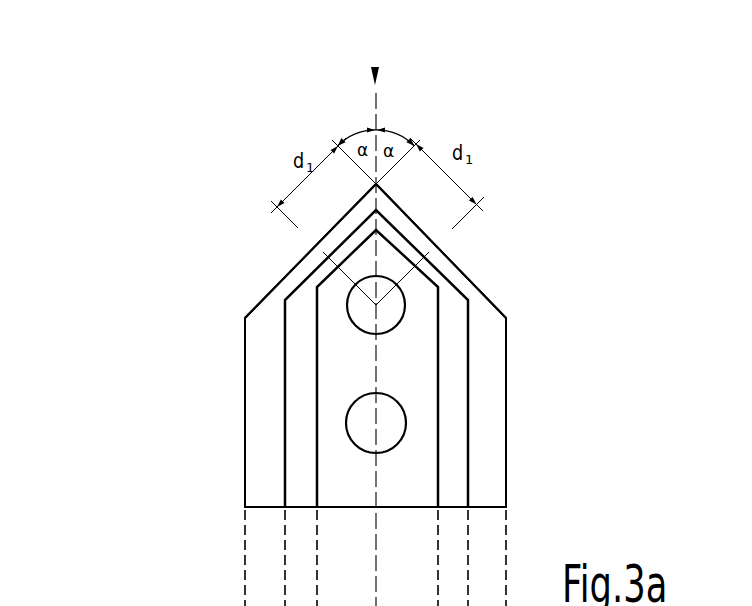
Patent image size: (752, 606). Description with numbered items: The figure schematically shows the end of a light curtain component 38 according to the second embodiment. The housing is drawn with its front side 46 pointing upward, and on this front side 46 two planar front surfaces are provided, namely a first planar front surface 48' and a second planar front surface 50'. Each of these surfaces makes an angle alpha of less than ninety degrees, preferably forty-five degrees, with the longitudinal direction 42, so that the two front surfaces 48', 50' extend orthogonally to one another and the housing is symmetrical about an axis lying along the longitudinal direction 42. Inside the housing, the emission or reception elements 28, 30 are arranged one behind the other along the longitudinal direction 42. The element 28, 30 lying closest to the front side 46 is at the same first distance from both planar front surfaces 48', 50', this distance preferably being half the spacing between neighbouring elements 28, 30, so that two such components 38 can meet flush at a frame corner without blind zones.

The light curtain component 38 is at (200, 178).
The longitudinal direction 42 is at (377, 112).
The front side 46 is at (375, 68).
The first planar front surface 48' is at (259, 251).
The second planar front surface 50' is at (489, 243).
The emission element 28 is at (358, 310).
The reception element 30 is at (358, 412).